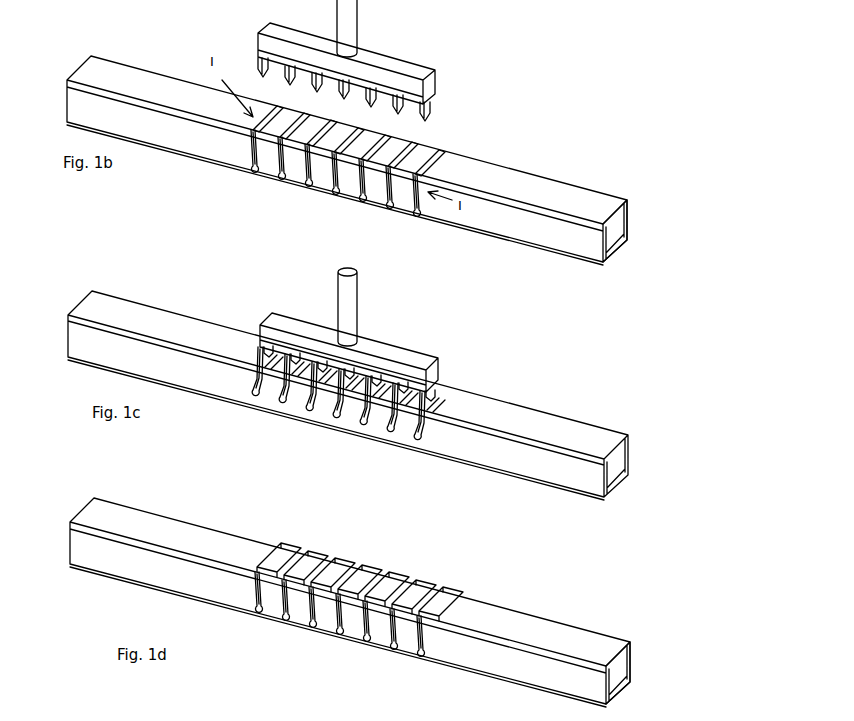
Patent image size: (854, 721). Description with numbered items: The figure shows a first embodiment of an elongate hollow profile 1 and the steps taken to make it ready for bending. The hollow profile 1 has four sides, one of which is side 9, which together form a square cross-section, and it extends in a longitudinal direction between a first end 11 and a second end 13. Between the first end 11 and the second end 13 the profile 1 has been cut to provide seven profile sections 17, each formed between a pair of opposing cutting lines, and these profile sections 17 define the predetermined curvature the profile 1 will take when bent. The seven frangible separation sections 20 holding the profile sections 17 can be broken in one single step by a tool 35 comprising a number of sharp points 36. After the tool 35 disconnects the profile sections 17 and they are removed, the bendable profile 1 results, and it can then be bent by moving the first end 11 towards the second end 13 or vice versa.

In FIG. 1B, the hollow profile 1 is at (177, 41).
In FIG. 1C, the hollow profile 1 is at (178, 293).
In FIG. 1D, the hollow profile 1 is at (588, 598).
In FIG. 1B, the side 9 is at (622, 0).
In FIG. 1B, the first end 11 is at (626, 250).
In FIG. 1D, the first end 11 is at (633, 665).
In FIG. 1B, the second end 13 is at (67, 97).
In FIG. 1D, the second end 13 is at (70, 538).
In FIG. 1B, the profile section 17 is at (253, 147).
In FIG. 1C, the profile section 17 is at (306, 418).
In FIG. 1D, the profile section 17 is at (359, 599).
In FIG. 1B, the frangible separation section 20 is at (430, 155).
In FIG. 1B, the tool 35 is at (352, 18).
In FIG. 1C, the tool 35 is at (358, 313).
In FIG. 1B, the sharp point 36 is at (434, 110).
In FIG. 1C, the sharp point 36 is at (349, 357).